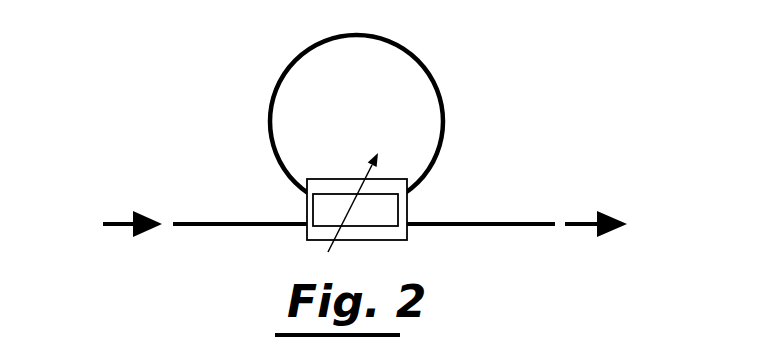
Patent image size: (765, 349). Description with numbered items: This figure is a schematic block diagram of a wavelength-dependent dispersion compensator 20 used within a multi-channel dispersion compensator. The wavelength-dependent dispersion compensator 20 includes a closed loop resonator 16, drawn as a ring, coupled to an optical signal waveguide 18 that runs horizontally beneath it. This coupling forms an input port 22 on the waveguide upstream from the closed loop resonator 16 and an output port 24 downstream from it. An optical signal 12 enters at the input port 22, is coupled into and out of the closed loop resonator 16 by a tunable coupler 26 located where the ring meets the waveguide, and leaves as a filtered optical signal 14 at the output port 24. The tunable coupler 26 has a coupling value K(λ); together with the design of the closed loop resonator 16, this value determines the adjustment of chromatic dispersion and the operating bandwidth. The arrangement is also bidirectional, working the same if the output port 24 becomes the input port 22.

The optical signal 12 is at (121, 218).
The filtered optical signal 14 is at (582, 216).
The closed loop resonator 16 is at (436, 80).
The optical signal waveguide 18 is at (267, 229).
The wavelength-dependent dispersion compensator 20 is at (442, 25).
The input port 22 is at (246, 215).
The output port 24 is at (518, 215).
The tunable coupler 26 is at (388, 240).